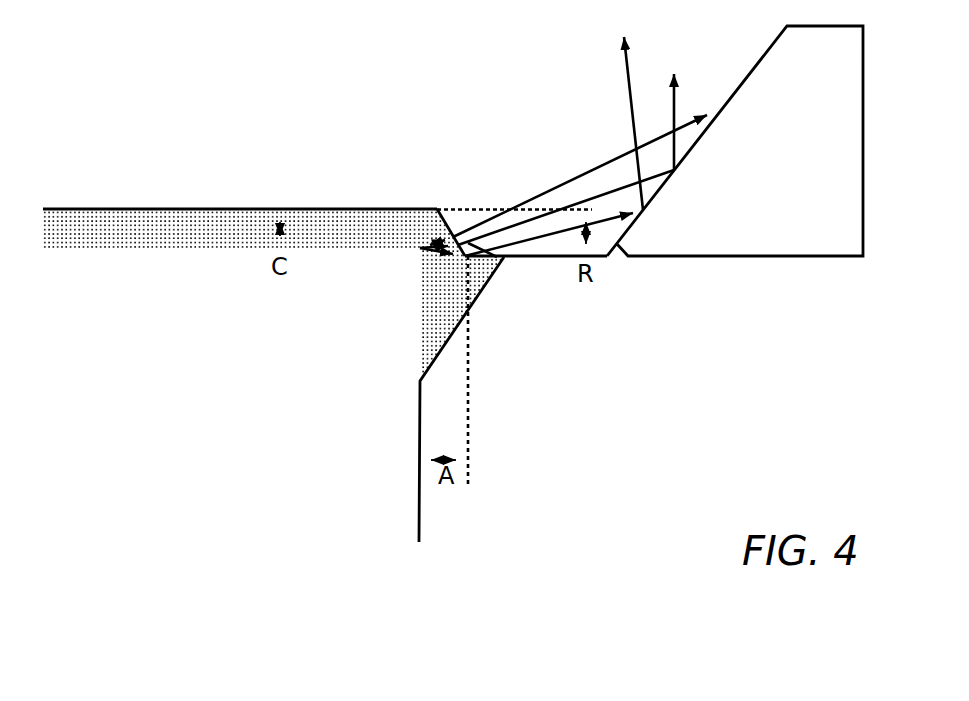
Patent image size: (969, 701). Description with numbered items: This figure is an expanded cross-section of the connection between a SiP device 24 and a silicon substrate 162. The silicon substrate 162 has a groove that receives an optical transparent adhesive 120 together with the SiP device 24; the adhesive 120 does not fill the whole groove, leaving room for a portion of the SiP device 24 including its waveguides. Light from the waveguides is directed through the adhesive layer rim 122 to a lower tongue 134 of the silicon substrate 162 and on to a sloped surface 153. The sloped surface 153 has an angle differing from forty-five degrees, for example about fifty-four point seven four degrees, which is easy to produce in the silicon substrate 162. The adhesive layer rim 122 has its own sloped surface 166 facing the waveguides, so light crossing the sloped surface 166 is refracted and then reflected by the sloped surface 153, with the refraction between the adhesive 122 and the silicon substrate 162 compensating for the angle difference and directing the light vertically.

The SiP device 24 is at (293, 355).
The optical transparent adhesive 120 is at (330, 209).
The adhesive layer rim 122 is at (448, 236).
The lower tongue 134 is at (557, 256).
The sloped surface 153 is at (643, 212).
The silicon substrate 162 is at (350, 83).
The sloped surface 166 is at (498, 258).